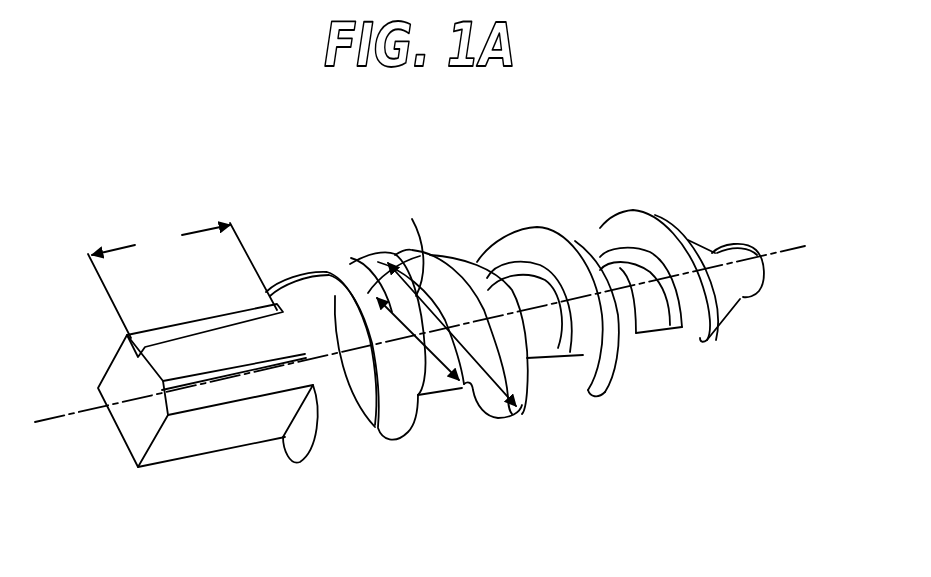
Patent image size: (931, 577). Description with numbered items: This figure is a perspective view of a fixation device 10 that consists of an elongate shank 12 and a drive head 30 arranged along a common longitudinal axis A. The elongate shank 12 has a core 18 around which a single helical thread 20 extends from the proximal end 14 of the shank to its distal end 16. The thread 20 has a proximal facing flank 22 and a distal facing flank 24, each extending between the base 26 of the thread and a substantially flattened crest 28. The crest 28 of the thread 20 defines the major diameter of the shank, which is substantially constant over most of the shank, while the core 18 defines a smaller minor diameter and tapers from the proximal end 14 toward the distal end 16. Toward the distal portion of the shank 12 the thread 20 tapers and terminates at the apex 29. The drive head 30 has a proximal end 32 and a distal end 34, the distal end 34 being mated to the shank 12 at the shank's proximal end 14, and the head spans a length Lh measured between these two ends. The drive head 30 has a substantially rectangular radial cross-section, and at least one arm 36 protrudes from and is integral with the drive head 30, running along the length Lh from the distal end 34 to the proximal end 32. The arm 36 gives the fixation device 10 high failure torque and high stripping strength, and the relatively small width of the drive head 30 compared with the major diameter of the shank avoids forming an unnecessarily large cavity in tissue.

The fixation device 10 is at (251, 178).
The elongate shank 12 is at (297, 491).
The proximal end 14 is at (290, 443).
The distal end 16 is at (770, 277).
The core 18 is at (547, 352).
The helical thread 20 is at (545, 236).
The proximal facing flank 22 is at (513, 247).
The distal facing flank 24 is at (637, 357).
The base 26 is at (473, 379).
The substantially flattened crest 28 is at (563, 238).
The apex 29 is at (760, 255).
The drive head 30 is at (186, 443).
The proximal end 32 is at (134, 428).
The distal end 34 is at (289, 333).
The arm 36 is at (172, 348).